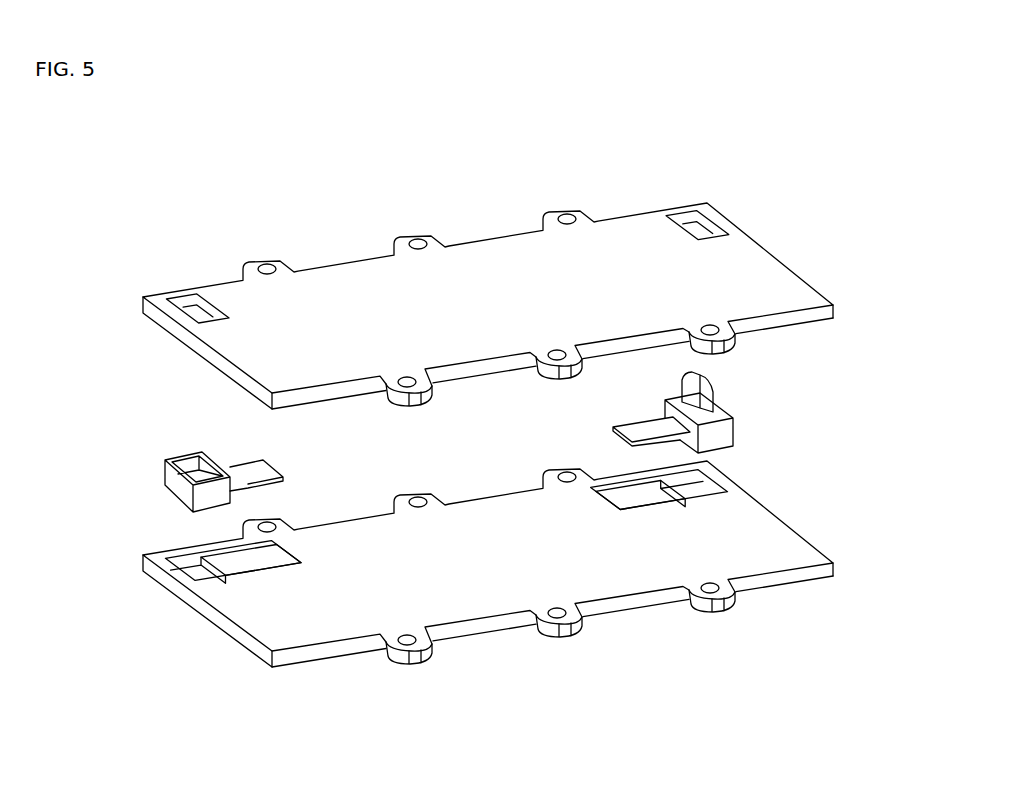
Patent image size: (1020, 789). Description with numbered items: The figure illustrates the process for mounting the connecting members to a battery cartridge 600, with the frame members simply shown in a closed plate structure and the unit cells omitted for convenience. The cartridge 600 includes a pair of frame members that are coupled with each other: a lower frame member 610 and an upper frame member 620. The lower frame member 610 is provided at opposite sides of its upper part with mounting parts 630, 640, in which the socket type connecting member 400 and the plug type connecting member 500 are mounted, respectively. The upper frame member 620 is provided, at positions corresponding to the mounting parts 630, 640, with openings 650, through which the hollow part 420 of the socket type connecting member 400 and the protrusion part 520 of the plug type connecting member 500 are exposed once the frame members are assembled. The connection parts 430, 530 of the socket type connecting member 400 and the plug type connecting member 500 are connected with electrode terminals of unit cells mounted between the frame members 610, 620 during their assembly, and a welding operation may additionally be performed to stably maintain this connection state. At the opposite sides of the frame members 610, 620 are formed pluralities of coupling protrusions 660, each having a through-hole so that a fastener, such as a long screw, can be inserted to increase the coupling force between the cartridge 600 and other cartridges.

The battery cartridge 600 is at (96, 138).
The upper frame member 620 is at (488, 273).
The lower frame member 610 is at (488, 604).
The openings 650 is at (190, 298).
The mounting part 630 is at (280, 552).
The mounting part 640 is at (632, 498).
The coupling protrusions 660 is at (720, 612).
The socket type connecting member 400 is at (206, 446).
The hollow part 420 is at (186, 456).
The connection part 430 is at (264, 470).
The plug type connecting member 500 is at (694, 402).
The protrusion part 520 is at (712, 388).
The connection part 530 is at (627, 429).